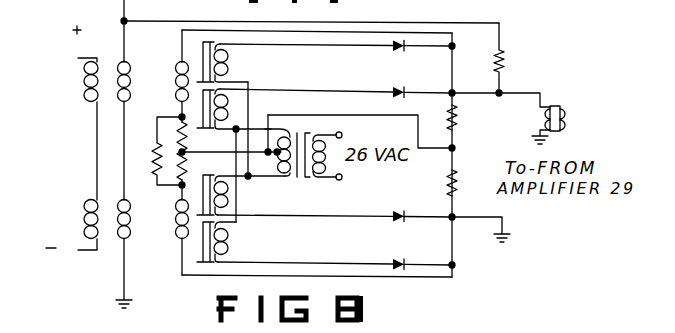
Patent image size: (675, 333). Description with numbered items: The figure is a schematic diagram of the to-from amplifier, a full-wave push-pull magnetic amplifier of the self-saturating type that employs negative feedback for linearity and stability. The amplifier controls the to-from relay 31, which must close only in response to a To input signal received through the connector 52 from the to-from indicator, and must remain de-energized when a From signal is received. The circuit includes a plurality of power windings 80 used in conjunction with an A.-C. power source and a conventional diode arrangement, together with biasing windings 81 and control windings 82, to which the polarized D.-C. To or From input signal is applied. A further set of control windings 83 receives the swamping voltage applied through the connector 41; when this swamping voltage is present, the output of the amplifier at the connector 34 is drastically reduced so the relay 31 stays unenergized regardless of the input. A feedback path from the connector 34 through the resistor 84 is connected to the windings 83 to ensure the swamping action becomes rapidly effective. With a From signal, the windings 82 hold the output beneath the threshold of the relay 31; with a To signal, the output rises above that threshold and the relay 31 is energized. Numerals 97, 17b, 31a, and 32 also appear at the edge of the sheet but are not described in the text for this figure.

The connector 41 is at (140, 12).
The connector 52 is at (73, 59).
The control windings 82 is at (82, 114).
The control windings 83 is at (141, 72).
The biasing windings 81 is at (172, 110).
The power windings 80 is at (262, 69).
The resistor 84 is at (506, 62).
The connector 34 is at (527, 92).
The to-from relay 31 is at (562, 102).
The component (FIG. 9) 97 is at (147, 332).
The component (FIG. 9) 17b is at (427, 326).
The component (FIG. 9) 31a is at (446, 327).
The component (FIG. 9) 32 is at (522, 332).